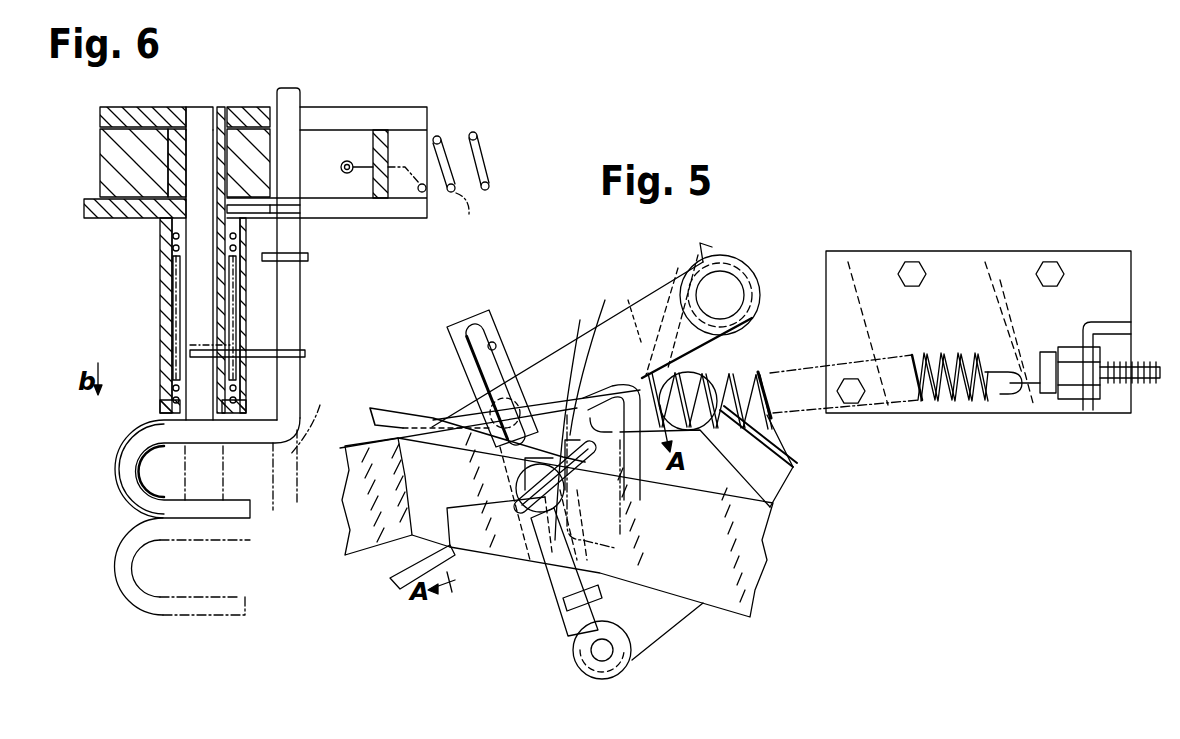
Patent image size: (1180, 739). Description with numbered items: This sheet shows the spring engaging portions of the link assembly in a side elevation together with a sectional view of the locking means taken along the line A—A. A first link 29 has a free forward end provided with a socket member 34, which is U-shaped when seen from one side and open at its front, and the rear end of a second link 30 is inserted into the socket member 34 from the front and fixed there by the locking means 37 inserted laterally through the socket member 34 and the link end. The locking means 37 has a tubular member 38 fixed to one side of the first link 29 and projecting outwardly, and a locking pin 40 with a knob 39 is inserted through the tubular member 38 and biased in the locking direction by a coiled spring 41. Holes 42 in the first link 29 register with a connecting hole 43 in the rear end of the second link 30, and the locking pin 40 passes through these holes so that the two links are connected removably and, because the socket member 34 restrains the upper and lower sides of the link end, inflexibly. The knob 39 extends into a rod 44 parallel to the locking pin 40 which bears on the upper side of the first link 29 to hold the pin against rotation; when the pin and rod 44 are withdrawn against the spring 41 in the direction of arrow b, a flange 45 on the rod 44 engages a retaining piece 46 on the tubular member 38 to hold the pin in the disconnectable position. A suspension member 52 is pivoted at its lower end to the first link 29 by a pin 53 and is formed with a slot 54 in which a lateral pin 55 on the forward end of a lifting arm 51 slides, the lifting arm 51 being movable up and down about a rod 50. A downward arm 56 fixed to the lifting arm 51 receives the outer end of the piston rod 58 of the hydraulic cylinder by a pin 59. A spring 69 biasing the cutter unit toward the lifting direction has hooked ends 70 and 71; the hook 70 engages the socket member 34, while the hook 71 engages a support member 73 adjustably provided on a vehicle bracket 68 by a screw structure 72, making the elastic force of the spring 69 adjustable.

In FIG. 6, the first link 29 is at (396, 218).
In FIG. 5, the first link 29 is at (746, 612).
In FIG. 6, the second link 30 is at (116, 154).
In FIG. 5, the second link 30 is at (386, 560).
In FIG. 6, the socket member 34 is at (384, 142).
In FIG. 5, the socket member 34 is at (470, 418).
In FIG. 6, the locking means 37 is at (130, 429).
In FIG. 5, the locking means 37 is at (523, 520).
In FIG. 6, the tubular member 38 is at (170, 238).
In FIG. 5, the tubular member 38 is at (518, 487).
In FIG. 6, the knob 39 is at (135, 496).
In FIG. 5, the knob 39 is at (573, 527).
In FIG. 6, the locking pin 40 is at (200, 280).
In FIG. 6, the coiled spring 41 is at (176, 326).
In FIG. 6, the holes 42 is at (222, 122).
In FIG. 6, the connecting hole 43 is at (190, 136).
In FIG. 6, the rod 44 is at (300, 341).
In FIG. 6, the flange 45 is at (308, 258).
In FIG. 5, the flange 45 is at (596, 355).
In FIG. 6, the retaining piece 46 is at (193, 358).
In FIG. 5, the retaining piece 46 is at (570, 425).
In FIG. 5, the rod 50 is at (724, 293).
In FIG. 5, the lifting arm 51 is at (660, 298).
In FIG. 5, the suspension member 52 is at (485, 314).
In FIG. 5, the pin 53 is at (632, 658).
In FIG. 5, the slot 54 is at (496, 344).
In FIG. 5, the lateral pin 55 is at (500, 392).
In FIG. 5, the downward arm 56 is at (732, 370).
In FIG. 5, the piston rod 58 is at (782, 458).
In FIG. 5, the pin 59 is at (725, 365).
In FIG. 5, the bracket 68 is at (1105, 312).
In FIG. 6, the spring 69 is at (461, 189).
In FIG. 5, the spring 69 is at (924, 405).
In FIG. 6, the hooked end 70 is at (362, 155).
In FIG. 5, the hooked end 70 is at (626, 385).
In FIG. 5, the hooked end 71 is at (1012, 396).
In FIG. 5, the screw structure 72 is at (1052, 400).
In FIG. 5, the support member 73 is at (1088, 392).